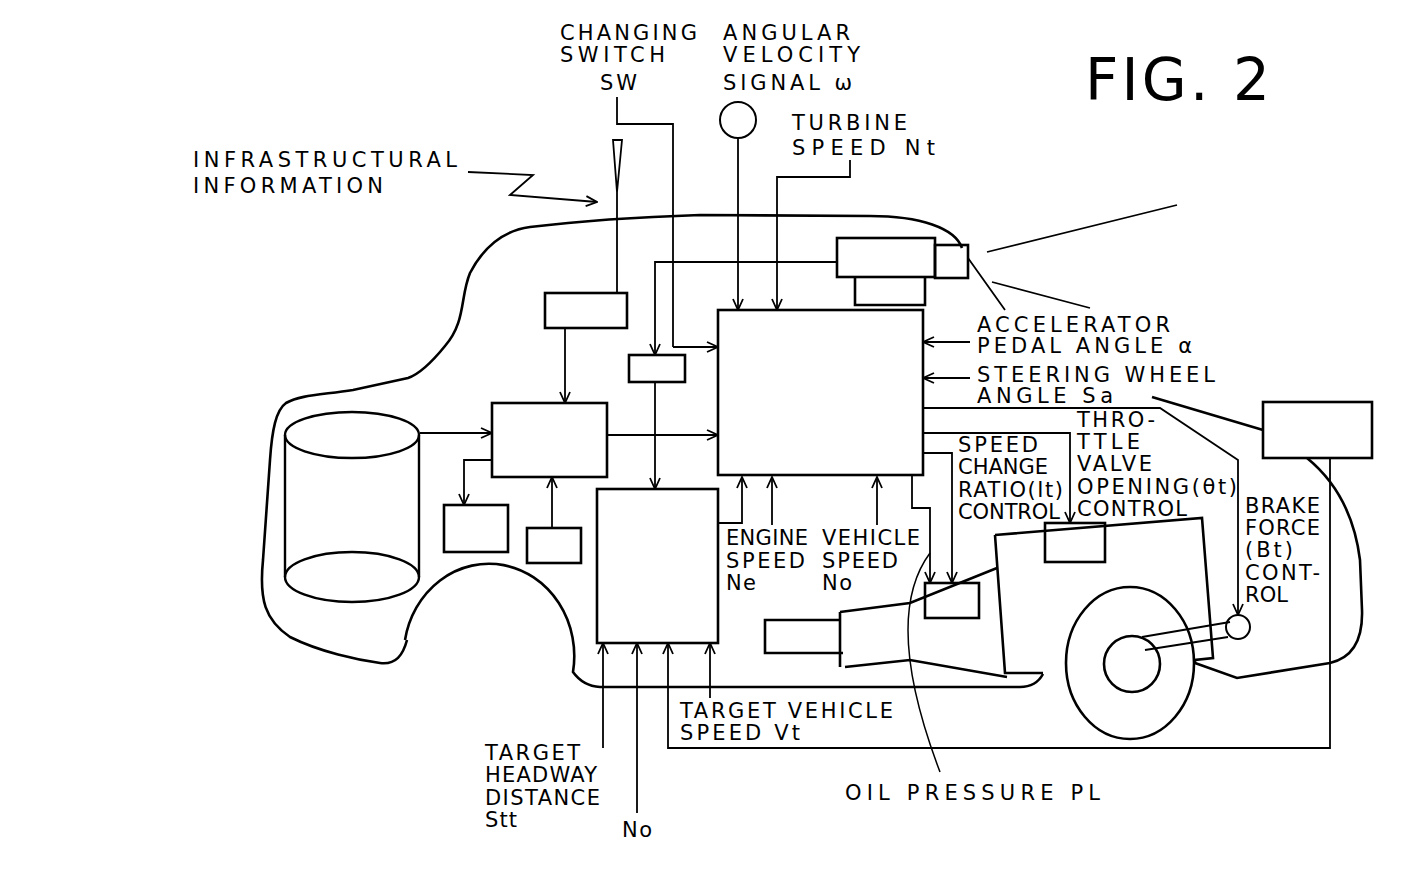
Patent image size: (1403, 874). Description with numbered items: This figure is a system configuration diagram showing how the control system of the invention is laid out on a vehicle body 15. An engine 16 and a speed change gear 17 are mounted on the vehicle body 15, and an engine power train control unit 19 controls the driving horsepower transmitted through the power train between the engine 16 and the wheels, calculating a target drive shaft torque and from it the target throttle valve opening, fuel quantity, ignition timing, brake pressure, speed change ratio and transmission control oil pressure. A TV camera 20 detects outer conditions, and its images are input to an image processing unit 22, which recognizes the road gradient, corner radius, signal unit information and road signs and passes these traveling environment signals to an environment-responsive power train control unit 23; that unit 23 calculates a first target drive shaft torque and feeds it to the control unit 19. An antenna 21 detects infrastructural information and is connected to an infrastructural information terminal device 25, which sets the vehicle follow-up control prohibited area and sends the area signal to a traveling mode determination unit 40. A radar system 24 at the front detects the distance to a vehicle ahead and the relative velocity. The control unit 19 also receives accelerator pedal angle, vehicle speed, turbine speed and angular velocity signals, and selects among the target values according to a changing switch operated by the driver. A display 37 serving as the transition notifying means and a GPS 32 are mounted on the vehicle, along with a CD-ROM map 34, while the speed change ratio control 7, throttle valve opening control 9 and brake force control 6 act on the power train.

The vehicle body 15 is at (417, 390).
The CD-ROM map database 34 is at (352, 430).
The traveling mode determination unit 40 is at (530, 403).
The display 37 is at (457, 513).
The GPS 32 is at (557, 563).
The infrastructural information terminal device 25 is at (590, 293).
The antenna 21 is at (610, 158).
The image processing unit 22 is at (629, 366).
The environment-responsive power train control unit 23 is at (963, 631).
The engine power train control unit 19 is at (923, 323).
The TV camera 20 is at (912, 238).
The radar system 24 is at (1320, 402).
The speed change ratio control actuator 7 is at (960, 583).
The throttle valve opening control actuator 9 is at (1055, 562).
The speed change gear 17 is at (953, 650).
The engine 16 is at (1048, 663).
The brake actuator 6 is at (1238, 645).